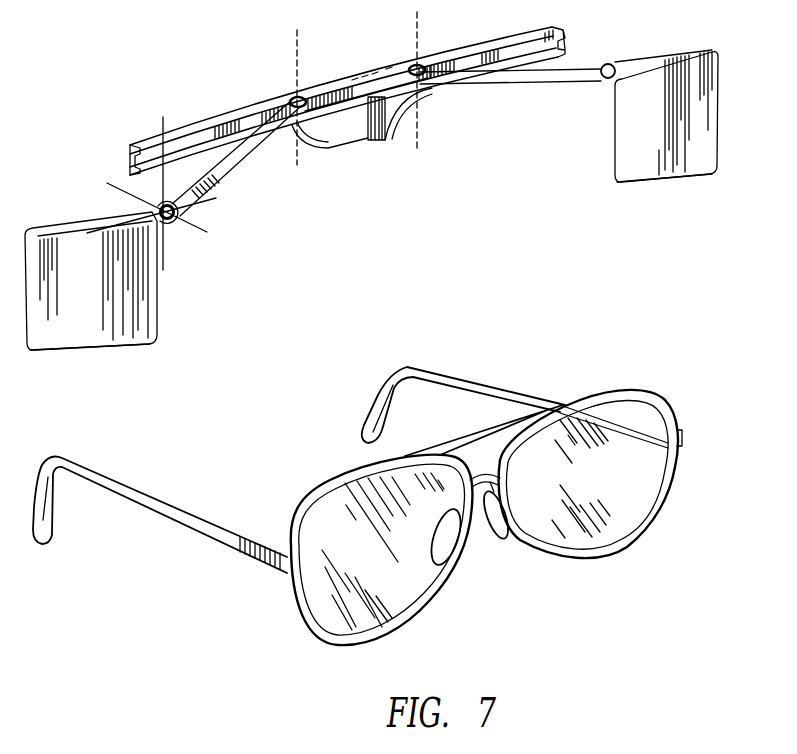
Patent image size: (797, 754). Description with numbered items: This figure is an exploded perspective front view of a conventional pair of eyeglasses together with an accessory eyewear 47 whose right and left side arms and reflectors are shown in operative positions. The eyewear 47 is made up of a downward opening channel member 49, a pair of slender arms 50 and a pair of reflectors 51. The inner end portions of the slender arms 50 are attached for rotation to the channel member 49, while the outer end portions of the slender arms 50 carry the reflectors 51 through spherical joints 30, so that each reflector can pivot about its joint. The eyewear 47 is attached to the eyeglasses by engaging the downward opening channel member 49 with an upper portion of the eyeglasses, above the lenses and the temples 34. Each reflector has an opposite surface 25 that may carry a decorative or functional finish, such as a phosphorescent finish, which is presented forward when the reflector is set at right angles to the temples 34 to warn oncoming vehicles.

The opposite surface 25 is at (77, 333).
The spherical joint 30 is at (173, 222).
The temple 34 is at (133, 487).
The eyewear 47 is at (463, 47).
The downward opening channel member 49 is at (243, 110).
The slender arm 50 is at (253, 160).
The reflector 51 is at (150, 343).